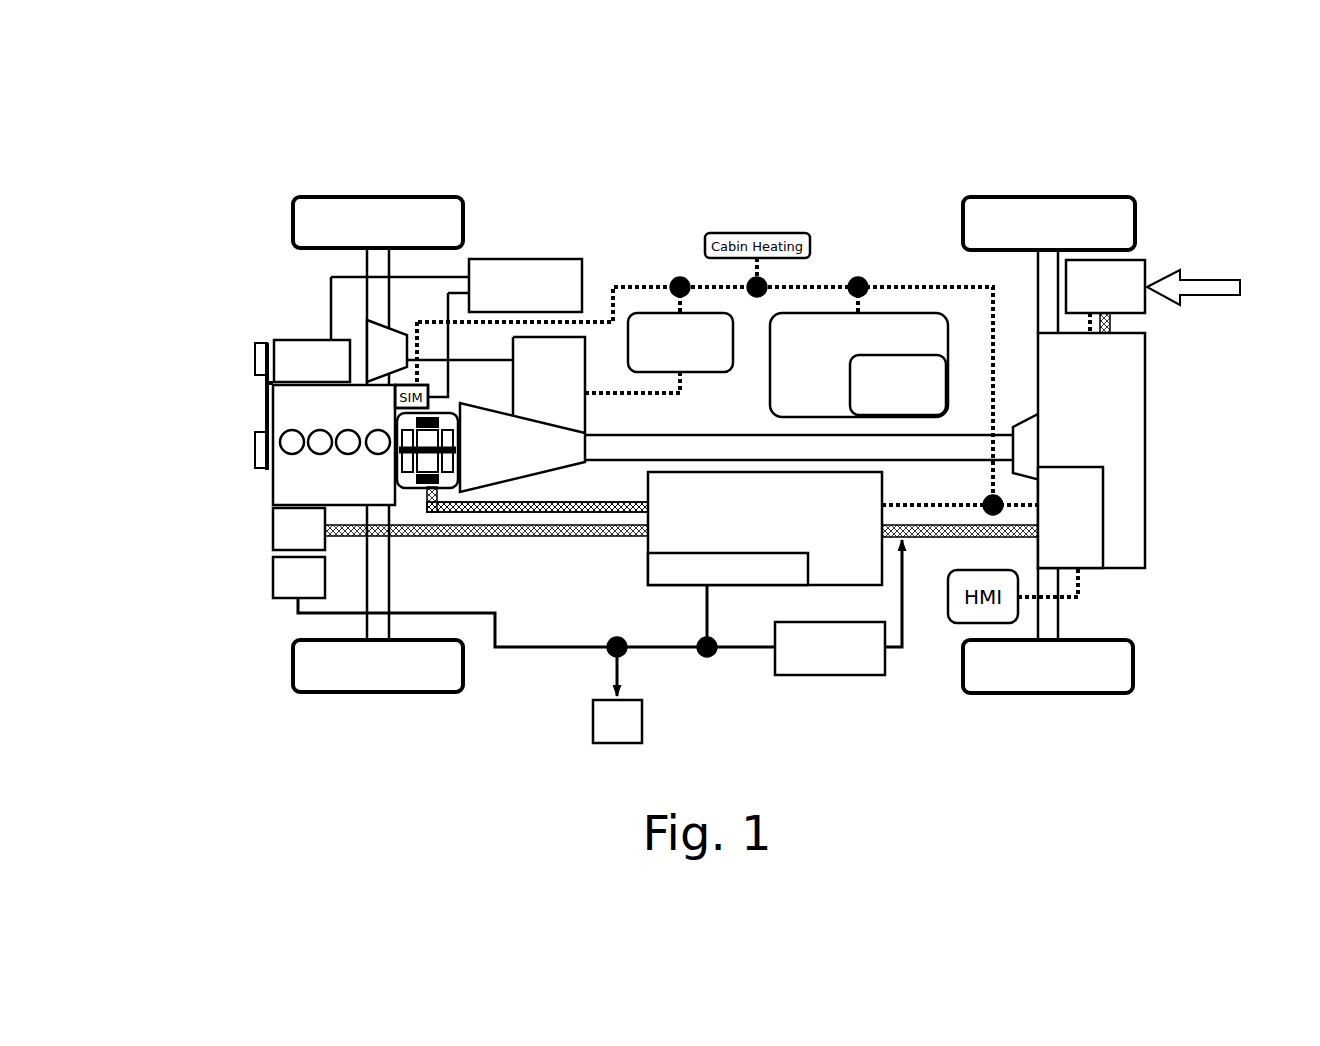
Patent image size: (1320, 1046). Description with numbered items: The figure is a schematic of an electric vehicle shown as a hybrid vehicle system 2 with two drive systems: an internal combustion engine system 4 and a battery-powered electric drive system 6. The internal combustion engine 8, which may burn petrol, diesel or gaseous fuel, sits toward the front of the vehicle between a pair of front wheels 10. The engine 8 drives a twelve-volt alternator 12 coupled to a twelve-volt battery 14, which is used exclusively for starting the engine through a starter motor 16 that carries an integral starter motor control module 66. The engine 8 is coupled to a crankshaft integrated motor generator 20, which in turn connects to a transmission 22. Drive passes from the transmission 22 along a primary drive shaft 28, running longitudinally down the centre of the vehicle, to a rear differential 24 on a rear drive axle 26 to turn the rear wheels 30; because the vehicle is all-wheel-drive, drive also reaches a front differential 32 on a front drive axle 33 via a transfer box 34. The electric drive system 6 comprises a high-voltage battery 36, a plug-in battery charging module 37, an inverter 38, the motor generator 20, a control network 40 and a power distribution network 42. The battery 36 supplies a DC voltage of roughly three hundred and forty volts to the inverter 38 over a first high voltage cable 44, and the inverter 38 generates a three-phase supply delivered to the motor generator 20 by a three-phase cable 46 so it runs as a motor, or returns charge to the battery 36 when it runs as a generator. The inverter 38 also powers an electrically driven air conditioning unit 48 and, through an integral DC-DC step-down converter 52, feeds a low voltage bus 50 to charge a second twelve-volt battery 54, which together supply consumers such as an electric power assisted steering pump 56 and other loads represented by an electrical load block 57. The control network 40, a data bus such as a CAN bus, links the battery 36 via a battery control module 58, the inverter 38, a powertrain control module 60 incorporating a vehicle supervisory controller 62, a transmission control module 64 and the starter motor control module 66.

The hybrid vehicle system 2 is at (1172, 128).
The internal combustion engine system 4 is at (198, 412).
The battery-powered electric drive system 6 is at (1185, 554).
The internal combustion engine 8 is at (285, 482).
The front wheels 10 is at (325, 208).
The 12V alternator 12 is at (288, 348).
The 12V battery 14 is at (518, 257).
The starter motor 16 is at (636, 284).
The crankshaft integrated motor generator (CIMG) 20 is at (434, 489).
The transmission 22 is at (538, 450).
The rear differential 24 is at (1028, 430).
The rear drive axle 26 is at (1047, 272).
The primary drive shaft 28 is at (652, 447).
The rear wheels 30 is at (1098, 208).
The front differential 32 is at (387, 351).
The front drive axle 33 is at (375, 260).
The transfer box 34 is at (522, 414).
The high-voltage battery 36 is at (1140, 430).
The plug-in battery charging module 37 is at (1140, 272).
The inverter 38 is at (765, 528).
The control network 40 is at (827, 250).
The power distribution network 42 is at (588, 603).
The first high voltage cable 44 is at (904, 758).
The three-phase cable 46 is at (595, 510).
The electrically driven air conditioning unit 48 is at (271, 529).
The low voltage bus 50 is at (737, 652).
The DC-DC step-down converter 52 is at (684, 580).
The second 12V battery 54 is at (823, 668).
The electric power assisted steering pump 56 is at (271, 577).
The electrical load block 57 is at (617, 721).
The battery control module 58 is at (1100, 485).
The powertrain control module 60 is at (859, 365).
The vehicle supervisory controller 62 is at (945, 405).
The transmission control module 64 is at (722, 365).
The starter motor control module 66 is at (393, 383).